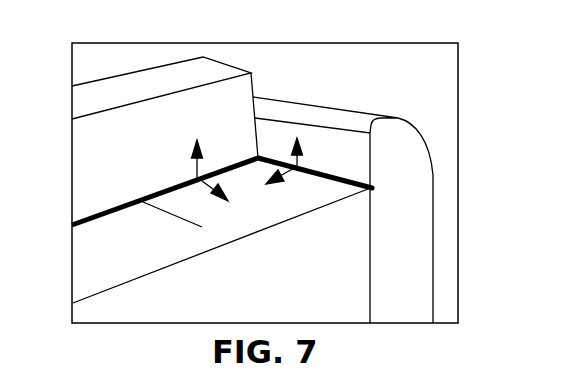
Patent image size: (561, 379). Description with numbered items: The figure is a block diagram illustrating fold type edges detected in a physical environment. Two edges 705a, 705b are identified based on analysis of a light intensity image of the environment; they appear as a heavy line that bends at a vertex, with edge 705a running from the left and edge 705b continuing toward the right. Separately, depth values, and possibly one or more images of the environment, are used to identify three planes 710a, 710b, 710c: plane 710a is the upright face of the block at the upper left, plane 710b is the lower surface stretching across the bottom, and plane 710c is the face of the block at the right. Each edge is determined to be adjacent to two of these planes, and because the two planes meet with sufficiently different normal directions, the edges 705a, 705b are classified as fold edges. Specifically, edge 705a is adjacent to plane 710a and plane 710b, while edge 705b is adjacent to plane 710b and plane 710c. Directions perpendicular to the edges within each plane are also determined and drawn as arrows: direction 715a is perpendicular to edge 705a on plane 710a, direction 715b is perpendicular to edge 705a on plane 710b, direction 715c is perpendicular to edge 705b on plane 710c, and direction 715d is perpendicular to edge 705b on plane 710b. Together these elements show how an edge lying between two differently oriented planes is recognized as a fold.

The edge 705a is at (95, 214).
The edge 705b is at (365, 186).
The plane 710a is at (165, 107).
The plane 710b is at (220, 246).
The plane 710c is at (343, 210).
The direction 715a is at (196, 166).
The direction 715b is at (205, 185).
The direction 715c is at (292, 142).
The direction 715d is at (291, 171).